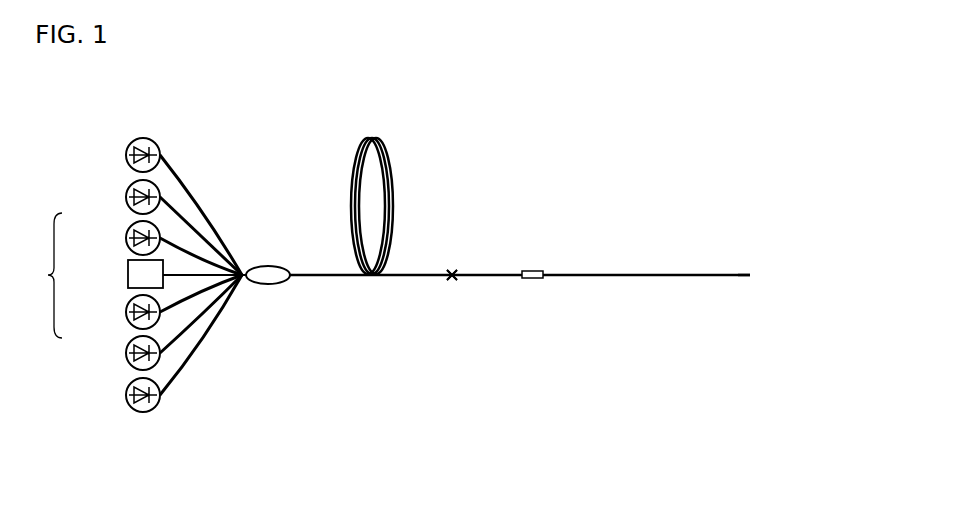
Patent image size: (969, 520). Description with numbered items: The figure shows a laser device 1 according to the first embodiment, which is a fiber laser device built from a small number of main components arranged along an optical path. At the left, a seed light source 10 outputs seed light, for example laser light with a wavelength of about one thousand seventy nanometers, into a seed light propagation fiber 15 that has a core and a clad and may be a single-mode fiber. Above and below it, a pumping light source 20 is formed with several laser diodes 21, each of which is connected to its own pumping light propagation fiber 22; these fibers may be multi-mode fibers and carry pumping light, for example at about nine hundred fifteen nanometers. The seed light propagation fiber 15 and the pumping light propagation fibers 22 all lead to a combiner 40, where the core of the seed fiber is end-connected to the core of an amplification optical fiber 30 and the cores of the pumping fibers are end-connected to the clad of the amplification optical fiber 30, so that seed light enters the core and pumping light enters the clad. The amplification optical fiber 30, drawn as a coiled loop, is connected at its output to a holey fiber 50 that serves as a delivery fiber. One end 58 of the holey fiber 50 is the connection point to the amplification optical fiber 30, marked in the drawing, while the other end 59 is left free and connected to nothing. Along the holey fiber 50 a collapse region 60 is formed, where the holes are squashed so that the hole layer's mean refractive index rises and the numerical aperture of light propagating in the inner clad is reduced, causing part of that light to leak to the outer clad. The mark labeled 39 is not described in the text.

The laser device 1 is at (558, 132).
The seed light source 10 is at (165, 288).
The seed light propagation fiber 15 is at (228, 262).
The pumping light source 20 is at (93, 275).
The laser diodes 21 is at (128, 164).
The pumping light propagation fibers 22 is at (186, 210).
The amplification optical fiber 30 is at (393, 274).
The connection point 39 is at (450, 278).
The combiner 40 is at (275, 273).
The holey fiber 50 is at (632, 274).
The one end 58 is at (455, 277).
The other end 59 is at (750, 274).
The collapse region 60 is at (537, 271).